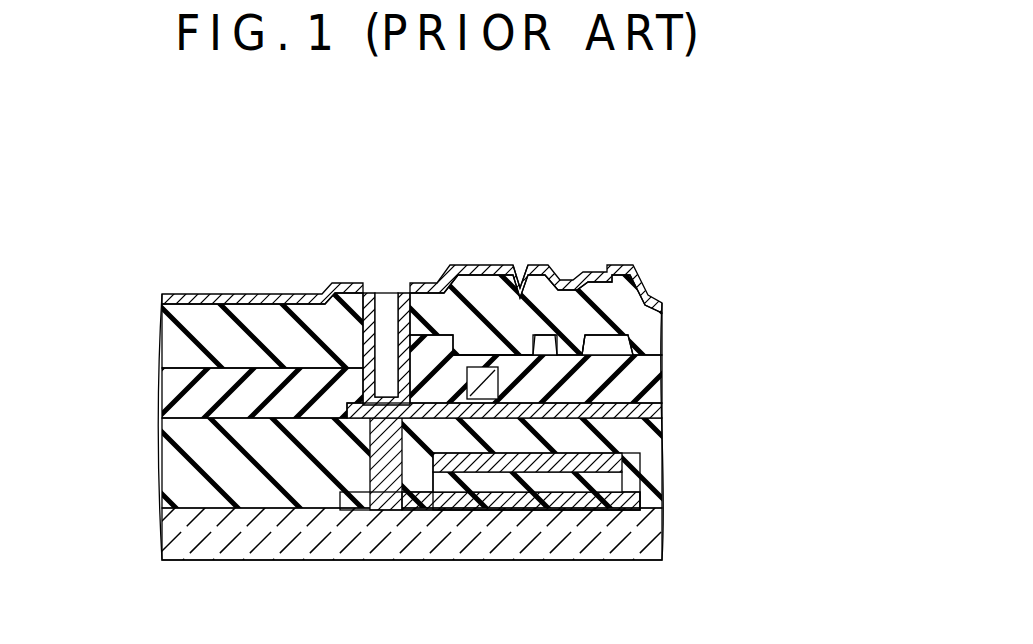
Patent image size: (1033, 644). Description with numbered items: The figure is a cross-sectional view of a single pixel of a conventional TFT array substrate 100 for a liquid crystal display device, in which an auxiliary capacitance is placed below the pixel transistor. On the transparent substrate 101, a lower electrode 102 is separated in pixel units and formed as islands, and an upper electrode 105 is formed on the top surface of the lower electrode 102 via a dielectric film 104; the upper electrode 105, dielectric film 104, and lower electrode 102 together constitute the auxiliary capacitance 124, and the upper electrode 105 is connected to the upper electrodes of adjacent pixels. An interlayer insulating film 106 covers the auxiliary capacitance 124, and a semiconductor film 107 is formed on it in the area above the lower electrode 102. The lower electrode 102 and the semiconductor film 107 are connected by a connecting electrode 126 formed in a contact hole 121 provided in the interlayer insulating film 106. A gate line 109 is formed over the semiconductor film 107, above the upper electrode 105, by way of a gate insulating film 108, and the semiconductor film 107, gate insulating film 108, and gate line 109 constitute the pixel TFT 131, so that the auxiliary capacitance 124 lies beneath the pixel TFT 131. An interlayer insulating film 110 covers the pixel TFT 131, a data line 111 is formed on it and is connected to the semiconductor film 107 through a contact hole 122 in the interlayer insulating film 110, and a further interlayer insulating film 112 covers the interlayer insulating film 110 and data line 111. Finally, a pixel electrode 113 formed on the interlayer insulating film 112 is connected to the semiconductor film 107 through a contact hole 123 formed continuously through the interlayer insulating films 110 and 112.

The TFT array substrate 100 is at (672, 202).
The transparent substrate 101 is at (165, 532).
The lower electrode 102 is at (635, 501).
The dielectric film 104 is at (625, 482).
The upper electrode 105 is at (625, 462).
The interlayer insulating film 106 is at (165, 466).
The semiconductor film 107 is at (630, 410).
The gate insulating film 108 is at (518, 288).
The gate line 109 is at (483, 396).
The interlayer insulating film 110 is at (165, 398).
The data line 111 is at (628, 350).
The interlayer insulating film 112 is at (165, 342).
The pixel electrode 113 is at (160, 300).
The contact hole 121 is at (382, 453).
The contact hole 122 is at (578, 350).
The contact hole 123 is at (376, 305).
The auxiliary capacitance 124 is at (764, 438).
The connecting electrode 126 is at (391, 478).
The pixel TFT 131 is at (527, 390).